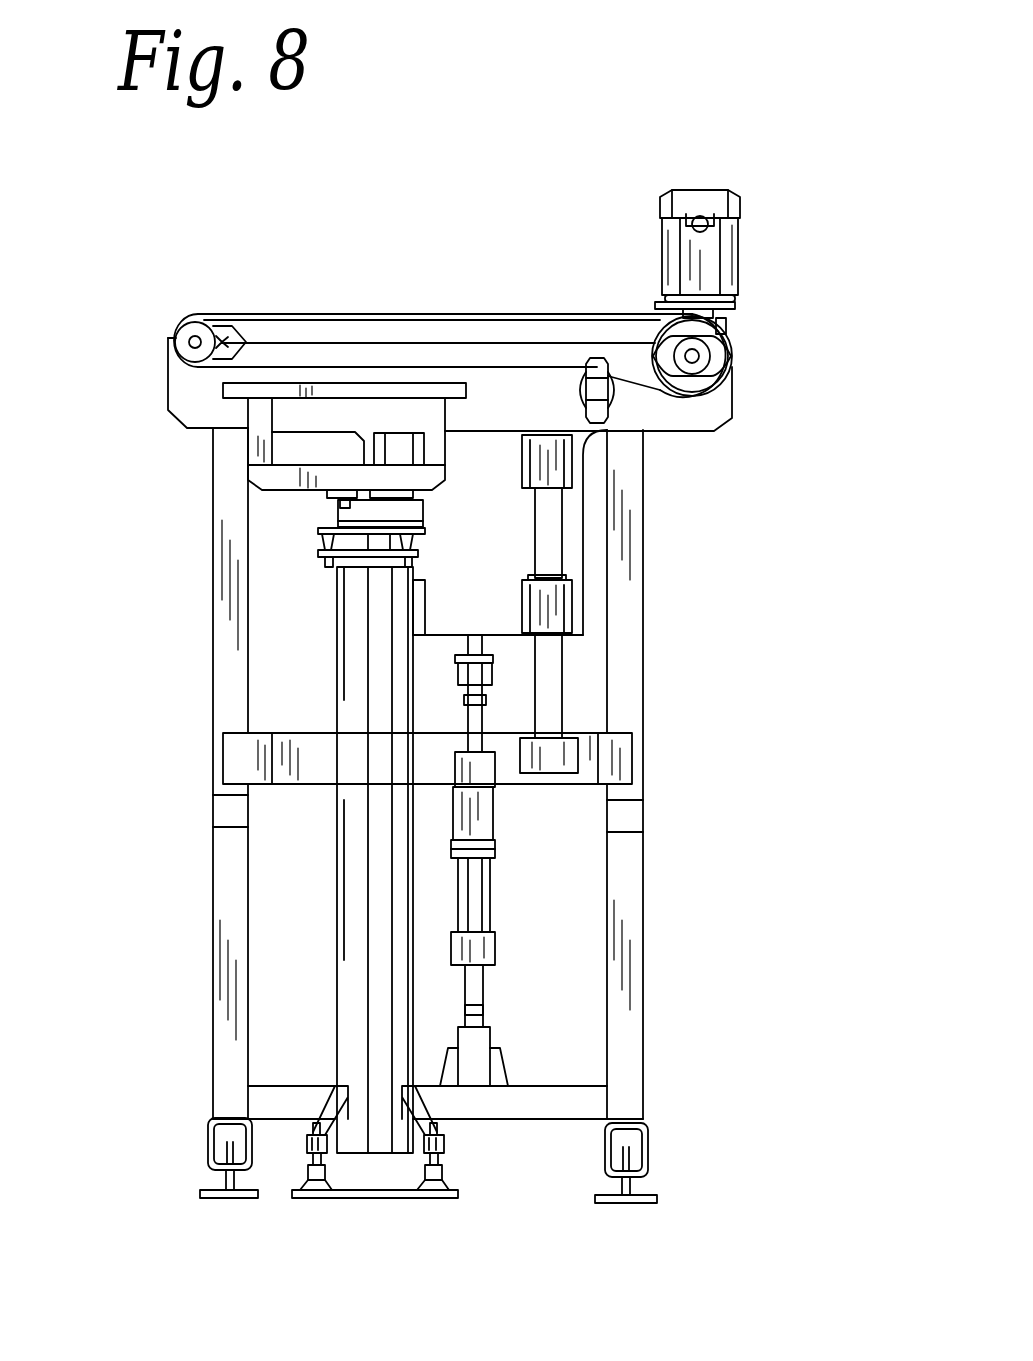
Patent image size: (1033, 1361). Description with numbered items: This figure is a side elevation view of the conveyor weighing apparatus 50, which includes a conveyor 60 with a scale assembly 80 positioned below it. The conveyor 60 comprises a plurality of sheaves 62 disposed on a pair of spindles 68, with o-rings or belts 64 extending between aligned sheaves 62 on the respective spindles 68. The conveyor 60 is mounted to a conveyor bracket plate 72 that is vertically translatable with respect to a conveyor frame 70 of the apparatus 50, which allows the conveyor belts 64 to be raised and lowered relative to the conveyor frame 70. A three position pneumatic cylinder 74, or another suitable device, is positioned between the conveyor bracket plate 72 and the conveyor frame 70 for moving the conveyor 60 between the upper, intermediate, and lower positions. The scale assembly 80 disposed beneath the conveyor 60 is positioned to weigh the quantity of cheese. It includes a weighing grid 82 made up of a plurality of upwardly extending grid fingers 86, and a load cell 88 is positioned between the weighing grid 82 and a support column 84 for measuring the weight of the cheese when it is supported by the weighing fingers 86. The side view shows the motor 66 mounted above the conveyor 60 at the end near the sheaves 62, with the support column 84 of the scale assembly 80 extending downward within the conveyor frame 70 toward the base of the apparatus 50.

The conveyor weighing apparatus 50 is at (663, 700).
The conveyor 60 is at (732, 396).
The sheaves 62 is at (727, 329).
The belts 64 is at (577, 316).
The motor 66 is at (740, 240).
The spindles 68 is at (699, 353).
The conveyor frame 70 is at (643, 977).
The conveyor bracket plate 72 is at (585, 532).
The three position pneumatic cylinder 74 is at (493, 905).
The scale assembly 80 is at (340, 656).
The weighing grid 82 is at (248, 455).
The support column 84 is at (343, 910).
The grid fingers 86 is at (223, 393).
The load cell 88 is at (338, 512).